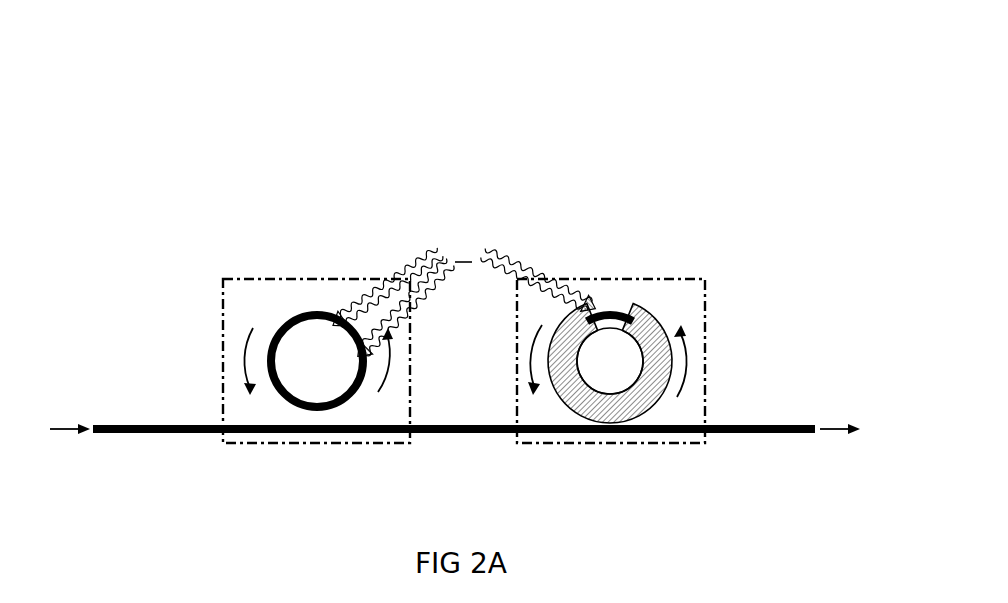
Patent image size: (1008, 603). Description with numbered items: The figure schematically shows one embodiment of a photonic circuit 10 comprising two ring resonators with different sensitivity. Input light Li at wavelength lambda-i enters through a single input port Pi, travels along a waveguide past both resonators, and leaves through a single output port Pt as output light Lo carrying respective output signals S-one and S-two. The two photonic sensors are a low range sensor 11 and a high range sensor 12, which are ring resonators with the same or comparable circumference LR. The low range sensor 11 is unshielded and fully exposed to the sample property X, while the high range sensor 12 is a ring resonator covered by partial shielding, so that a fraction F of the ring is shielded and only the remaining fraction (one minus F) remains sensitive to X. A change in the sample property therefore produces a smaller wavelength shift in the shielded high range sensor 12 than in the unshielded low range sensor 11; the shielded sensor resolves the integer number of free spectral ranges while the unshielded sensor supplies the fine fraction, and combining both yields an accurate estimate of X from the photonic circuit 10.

The photonic circuit 10 is at (184, 139).
The low range sensor 11 is at (236, 304).
The high range sensor 12 is at (692, 304).